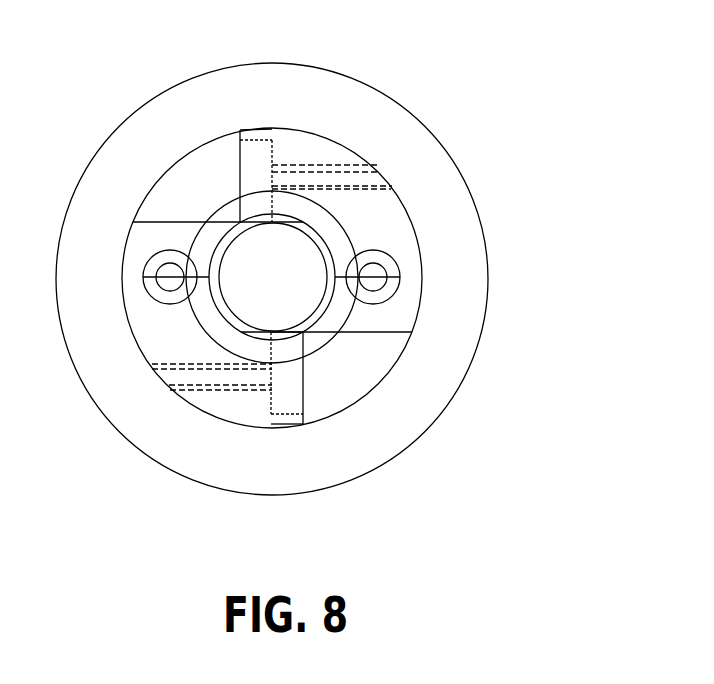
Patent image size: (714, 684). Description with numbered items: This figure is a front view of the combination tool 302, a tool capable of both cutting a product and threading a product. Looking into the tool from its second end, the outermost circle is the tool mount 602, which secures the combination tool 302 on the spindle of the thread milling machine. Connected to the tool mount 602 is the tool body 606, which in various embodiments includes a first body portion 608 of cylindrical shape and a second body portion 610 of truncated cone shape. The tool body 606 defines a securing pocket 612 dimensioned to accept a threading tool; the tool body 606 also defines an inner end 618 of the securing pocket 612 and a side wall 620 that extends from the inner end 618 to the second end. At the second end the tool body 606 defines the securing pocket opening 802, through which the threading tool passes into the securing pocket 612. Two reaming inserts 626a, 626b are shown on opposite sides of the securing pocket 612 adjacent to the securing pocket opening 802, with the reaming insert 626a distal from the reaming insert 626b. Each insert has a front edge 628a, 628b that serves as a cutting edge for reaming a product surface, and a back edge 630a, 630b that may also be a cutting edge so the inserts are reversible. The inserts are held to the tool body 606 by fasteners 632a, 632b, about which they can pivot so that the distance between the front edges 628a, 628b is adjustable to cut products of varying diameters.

The combination tool 302 is at (462, 38).
The tool mount 602 is at (417, 118).
The tool body 606 is at (405, 250).
The first body portion 608 is at (407, 262).
The second body portion 610 is at (327, 217).
The securing pocket 612 is at (305, 345).
The inner end 618 is at (330, 249).
The side wall 620 is at (212, 307).
The reaming insert 626a is at (240, 150).
The reaming insert 626b is at (312, 408).
The front edge 628a is at (247, 220).
The front edge 628b is at (292, 335).
The back edge 630a is at (258, 130).
The back edge 630b is at (283, 427).
The fastener 632a is at (323, 173).
The fastener 632b is at (245, 392).
The securing pocket opening 802 is at (342, 307).